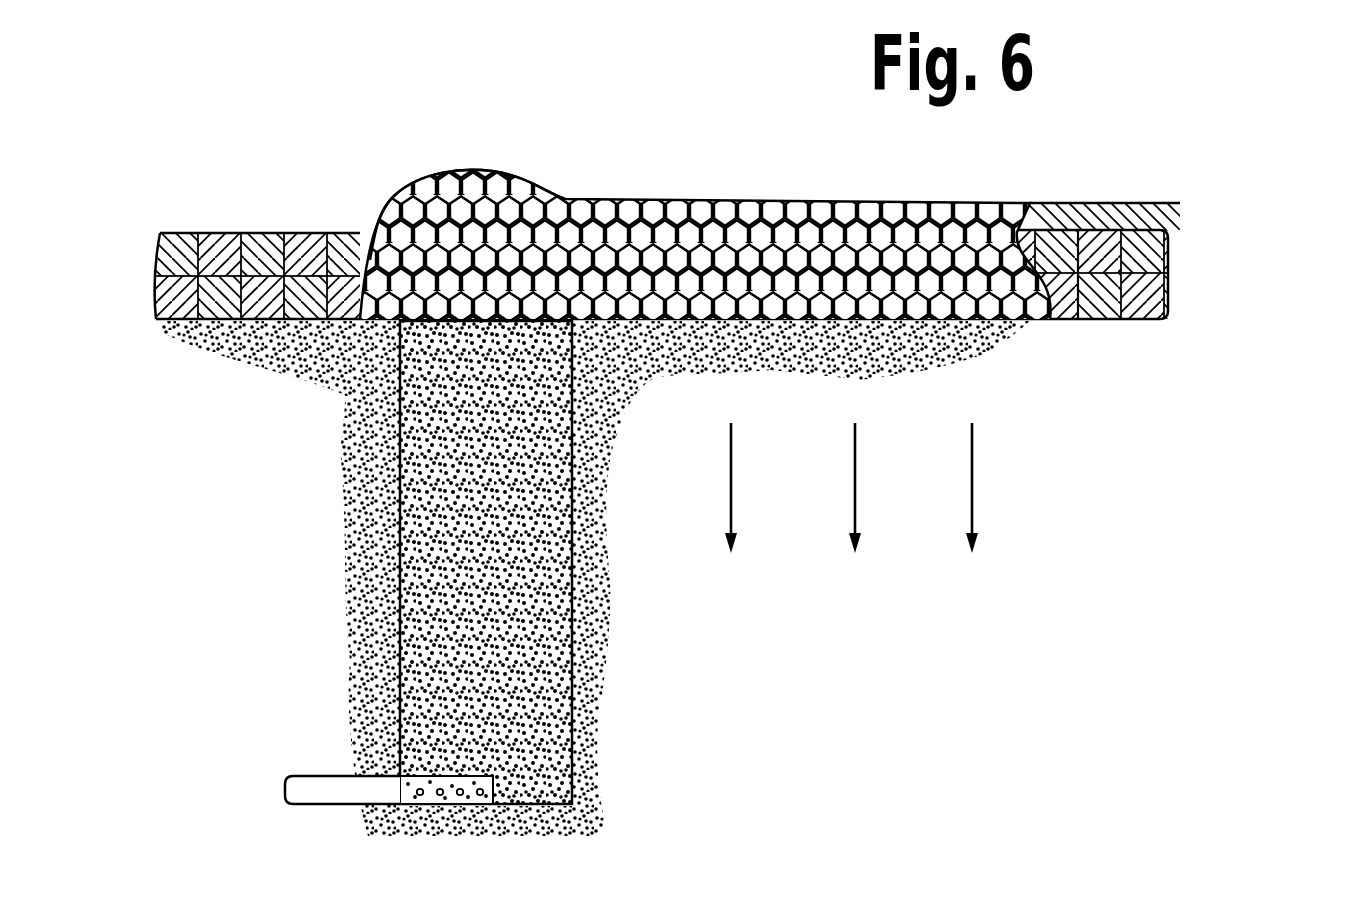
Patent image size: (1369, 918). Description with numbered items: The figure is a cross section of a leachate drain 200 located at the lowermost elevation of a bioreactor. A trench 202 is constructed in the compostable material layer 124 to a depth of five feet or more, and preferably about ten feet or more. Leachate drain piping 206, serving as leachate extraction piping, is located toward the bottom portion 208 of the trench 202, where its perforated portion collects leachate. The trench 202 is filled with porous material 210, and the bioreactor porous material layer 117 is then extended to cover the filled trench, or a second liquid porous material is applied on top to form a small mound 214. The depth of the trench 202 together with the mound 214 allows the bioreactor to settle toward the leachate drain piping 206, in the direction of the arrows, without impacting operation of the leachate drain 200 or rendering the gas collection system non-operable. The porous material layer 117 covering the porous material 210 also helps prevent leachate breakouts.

The porous material layer 117 is at (1168, 268).
The leachate drain 200 is at (485, 130).
The mound 214 is at (393, 190).
The porous material 210 is at (428, 408).
The bottom portion 208 is at (545, 648).
The trench 202 is at (425, 580).
The leachate drain piping 206 is at (314, 786).
The compostable material layer 124 is at (1018, 464).